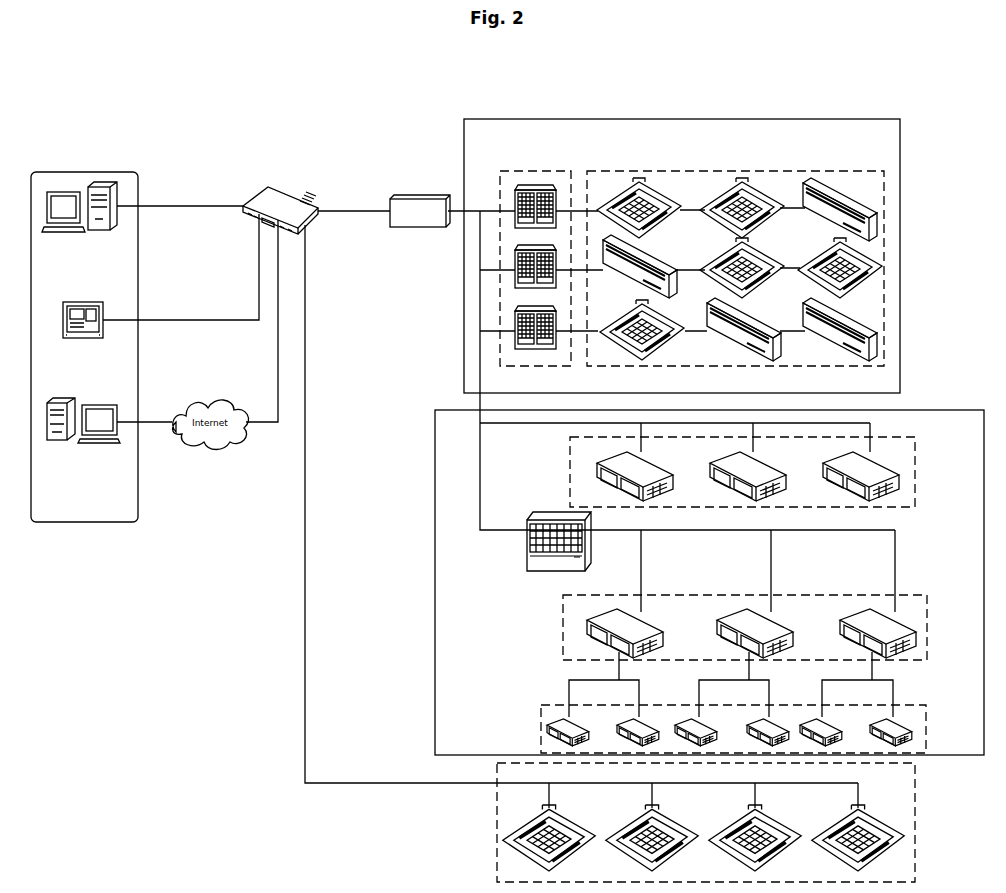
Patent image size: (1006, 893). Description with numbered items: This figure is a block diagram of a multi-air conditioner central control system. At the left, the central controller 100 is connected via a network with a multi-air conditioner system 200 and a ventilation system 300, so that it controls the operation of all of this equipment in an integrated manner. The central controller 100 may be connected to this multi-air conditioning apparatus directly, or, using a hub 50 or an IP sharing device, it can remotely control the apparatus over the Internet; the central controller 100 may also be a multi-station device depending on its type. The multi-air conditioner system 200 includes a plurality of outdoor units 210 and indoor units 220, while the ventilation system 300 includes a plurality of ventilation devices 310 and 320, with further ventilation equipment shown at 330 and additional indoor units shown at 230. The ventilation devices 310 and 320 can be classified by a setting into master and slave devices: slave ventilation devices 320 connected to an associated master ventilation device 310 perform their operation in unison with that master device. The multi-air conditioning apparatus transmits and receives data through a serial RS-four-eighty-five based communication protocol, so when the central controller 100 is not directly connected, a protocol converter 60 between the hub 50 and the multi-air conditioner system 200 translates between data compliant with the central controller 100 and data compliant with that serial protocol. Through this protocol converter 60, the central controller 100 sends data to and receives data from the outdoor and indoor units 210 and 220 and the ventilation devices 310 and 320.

The central controller 100 is at (115, 172).
The hub 50 is at (288, 196).
The protocol converter 60 is at (418, 195).
The multi-air conditioner system 200 is at (698, 119).
The outdoor units 210 is at (548, 171).
The indoor units 220 is at (765, 171).
The ventilation system 300 is at (944, 410).
The outdoor units 330 is at (916, 471).
The master ventilation device 310 is at (928, 628).
The slave ventilation devices 320 is at (927, 730).
The indoor units 230 is at (916, 822).